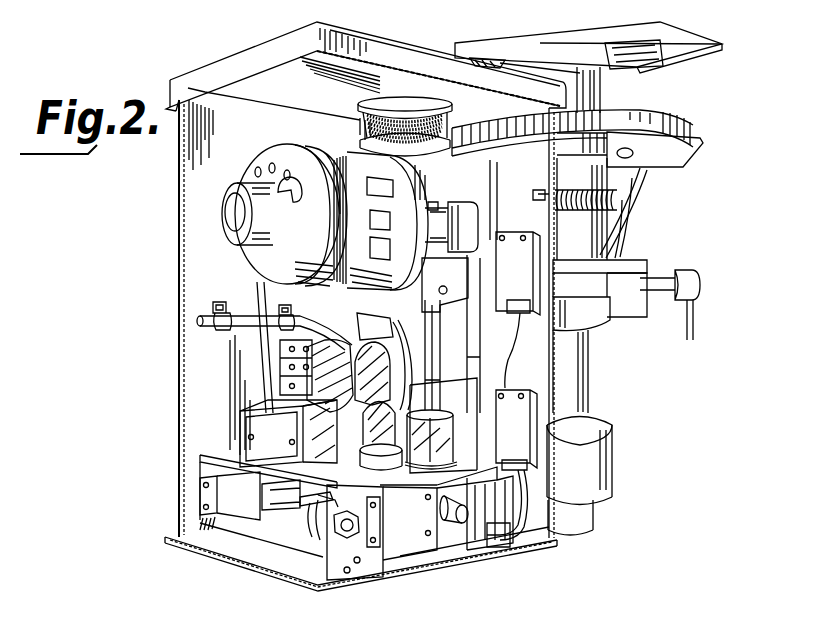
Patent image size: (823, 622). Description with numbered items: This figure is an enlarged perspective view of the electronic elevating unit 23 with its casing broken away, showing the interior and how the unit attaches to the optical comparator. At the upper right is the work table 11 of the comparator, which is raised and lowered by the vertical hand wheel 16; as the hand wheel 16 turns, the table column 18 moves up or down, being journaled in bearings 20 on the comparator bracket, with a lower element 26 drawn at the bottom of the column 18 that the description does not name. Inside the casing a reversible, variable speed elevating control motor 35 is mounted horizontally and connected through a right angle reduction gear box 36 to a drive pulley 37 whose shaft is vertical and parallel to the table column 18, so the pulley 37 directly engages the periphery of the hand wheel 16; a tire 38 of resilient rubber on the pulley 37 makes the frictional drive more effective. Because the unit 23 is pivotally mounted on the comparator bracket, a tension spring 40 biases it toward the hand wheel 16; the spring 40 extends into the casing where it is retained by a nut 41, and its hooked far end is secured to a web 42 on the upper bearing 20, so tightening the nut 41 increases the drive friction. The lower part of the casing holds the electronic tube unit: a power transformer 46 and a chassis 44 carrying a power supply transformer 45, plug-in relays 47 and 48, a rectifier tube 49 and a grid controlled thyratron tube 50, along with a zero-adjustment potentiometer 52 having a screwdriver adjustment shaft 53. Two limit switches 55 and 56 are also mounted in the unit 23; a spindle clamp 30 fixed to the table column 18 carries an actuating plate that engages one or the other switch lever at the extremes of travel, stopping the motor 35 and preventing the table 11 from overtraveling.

The work table 11 is at (707, 33).
The vertical hand wheel 16 is at (560, 113).
The table column 18 is at (590, 374).
The bearings 20 is at (583, 243).
The electronic elevating unit 23 is at (238, 47).
The drum 26 is at (600, 463).
The spindle clamp 30 is at (645, 310).
The elevating control motor 35 is at (260, 252).
The right angle reduction gear box 36 is at (445, 218).
The drive pulley 37 is at (377, 85).
The tire 38 is at (367, 128).
The tension spring 40 is at (590, 195).
The nut 41 is at (533, 191).
The web 42 is at (648, 188).
The chassis 44 is at (330, 497).
The power supply transformer 45 is at (472, 407).
The power transformer 46 is at (240, 423).
The plug-in relay 47 is at (357, 477).
The plug-in relay 48 is at (439, 445).
The rectifier tube 49 is at (310, 380).
The grid controlled thyratron tube 50 is at (353, 343).
The zero-adjustment potentiometer 52 is at (335, 495).
The screwdriver adjustment shaft 53 is at (350, 533).
The limit switch 55 is at (512, 222).
The limit switch 56 is at (520, 394).